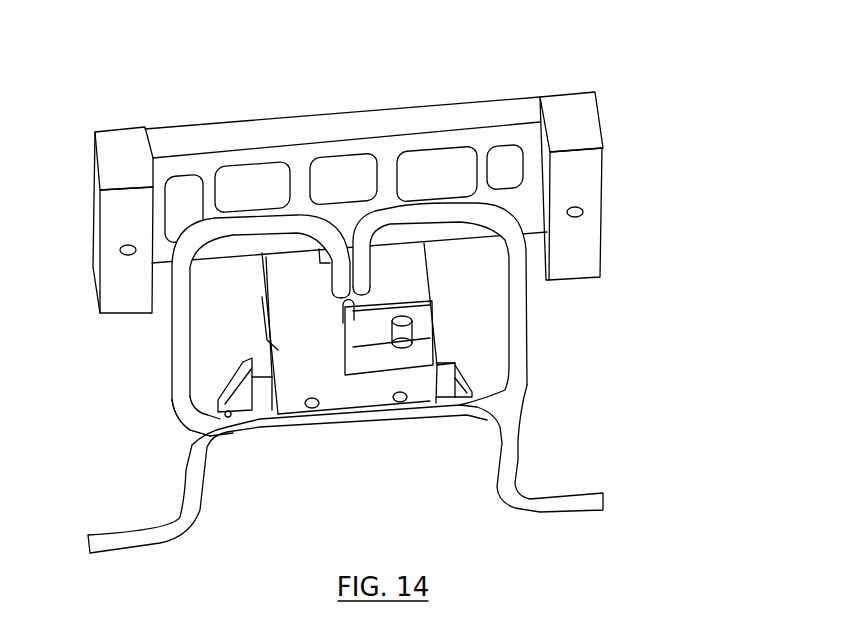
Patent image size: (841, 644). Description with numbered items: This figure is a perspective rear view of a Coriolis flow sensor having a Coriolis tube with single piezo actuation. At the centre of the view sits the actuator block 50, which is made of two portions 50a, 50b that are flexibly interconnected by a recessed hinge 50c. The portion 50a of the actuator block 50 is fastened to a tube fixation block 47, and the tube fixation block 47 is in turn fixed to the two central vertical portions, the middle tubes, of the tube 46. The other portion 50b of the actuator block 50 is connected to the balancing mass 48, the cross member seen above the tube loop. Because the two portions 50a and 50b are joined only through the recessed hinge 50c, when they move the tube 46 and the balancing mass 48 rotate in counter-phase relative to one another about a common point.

The tube 46 is at (357, 262).
The tube fixation block 47 is at (443, 387).
The balancing mass 48 is at (378, 152).
The actuator block 50 is at (375, 330).
The portion of the actuator block 50a is at (287, 369).
The portion of the actuator block 50b is at (408, 283).
The recessed hinge 50c is at (357, 333).